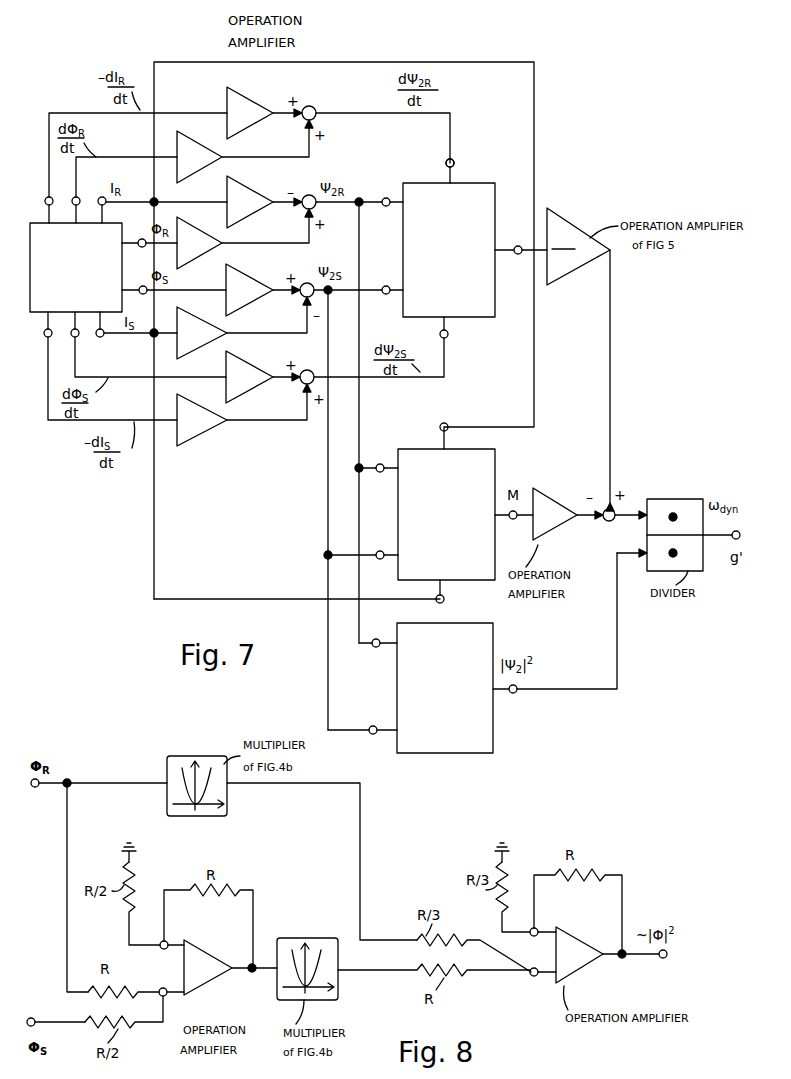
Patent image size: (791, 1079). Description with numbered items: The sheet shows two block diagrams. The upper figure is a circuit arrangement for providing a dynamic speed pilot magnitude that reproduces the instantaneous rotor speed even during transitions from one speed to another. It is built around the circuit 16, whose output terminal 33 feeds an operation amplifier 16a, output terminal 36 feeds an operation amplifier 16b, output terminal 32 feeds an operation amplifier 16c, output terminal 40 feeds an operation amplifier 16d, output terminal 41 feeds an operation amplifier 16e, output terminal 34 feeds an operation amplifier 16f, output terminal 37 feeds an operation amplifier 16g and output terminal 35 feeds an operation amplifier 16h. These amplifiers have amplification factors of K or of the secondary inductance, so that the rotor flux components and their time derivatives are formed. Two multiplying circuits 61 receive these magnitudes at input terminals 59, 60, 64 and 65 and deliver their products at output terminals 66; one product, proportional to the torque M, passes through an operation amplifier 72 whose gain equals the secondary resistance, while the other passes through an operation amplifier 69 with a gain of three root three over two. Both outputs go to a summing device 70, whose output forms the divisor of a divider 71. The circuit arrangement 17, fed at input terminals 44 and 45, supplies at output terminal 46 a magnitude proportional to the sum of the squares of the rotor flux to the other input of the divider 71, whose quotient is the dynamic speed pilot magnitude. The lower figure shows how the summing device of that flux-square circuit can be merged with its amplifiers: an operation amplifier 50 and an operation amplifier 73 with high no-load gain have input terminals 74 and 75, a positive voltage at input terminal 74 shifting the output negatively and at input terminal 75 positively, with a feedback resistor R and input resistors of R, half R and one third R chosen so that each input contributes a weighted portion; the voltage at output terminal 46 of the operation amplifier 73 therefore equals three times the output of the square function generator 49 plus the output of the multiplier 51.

In FIG. 7, the circuit 16 is at (76, 267).
In FIG. 7, the operation amplifier 16a is at (242, 104).
In FIG. 7, the operation amplifier 16b is at (207, 150).
In FIG. 7, the operation amplifier 16c is at (242, 194).
In FIG. 7, the operation amplifier 16d is at (207, 237).
In FIG. 7, the operation amplifier 16e is at (259, 281).
In FIG. 7, the operation amplifier 16f is at (210, 322).
In FIG. 7, the operation amplifier 16g is at (259, 369).
In FIG. 7, the operation amplifier 16h is at (206, 436).
In FIG. 7, the circuit arrangement 17 is at (445, 688).
In FIG. 7, the output terminal 32 is at (155, 201).
In FIG. 7, the output terminal 33 is at (126, 168).
In FIG. 7, the output terminal 34 is at (133, 338).
In FIG. 7, the output terminal 35 is at (100, 366).
In FIG. 7, the output terminal 36 is at (117, 190).
In FIG. 7, the output terminal 37 is at (140, 344).
In FIG. 7, the output terminal 40 is at (149, 234).
In FIG. 7, the output terminal 41 is at (174, 281).
In FIG. 7, the input terminal 44 is at (378, 634).
In FIG. 8, the input terminal 44 is at (96, 794).
In FIG. 7, the input terminal 45 is at (362, 721).
In FIG. 8, the input terminal 45 is at (53, 1011).
In FIG. 7, the output terminal 46 is at (507, 704).
In FIG. 8, the output terminal 46 is at (663, 967).
In FIG. 8, the square function generator 49 is at (192, 756).
In FIG. 8, the operation amplifier 50 is at (198, 984).
In FIG. 8, the multiplier 51 is at (304, 938).
In FIG. 7, the input terminal 59 is at (361, 412).
In FIG. 7, the input terminal 60 is at (376, 324).
In FIG. 7, the multiplying circuit 61 is at (446, 381).
In FIG. 7, the input terminal 64 is at (457, 293).
In FIG. 7, the input terminal 65 is at (454, 468).
In FIG. 7, the output terminal 66 is at (521, 381).
In FIG. 7, the operation amplifier 69 is at (580, 224).
In FIG. 7, the summing device 70 is at (607, 524).
In FIG. 7, the divider 71 is at (670, 499).
In FIG. 7, the operation amplifier 72 is at (543, 531).
In FIG. 8, the operation amplifier 73 is at (571, 974).
In FIG. 8, the input terminal 74 is at (162, 940).
In FIG. 8, the input terminal 75 is at (349, 974).